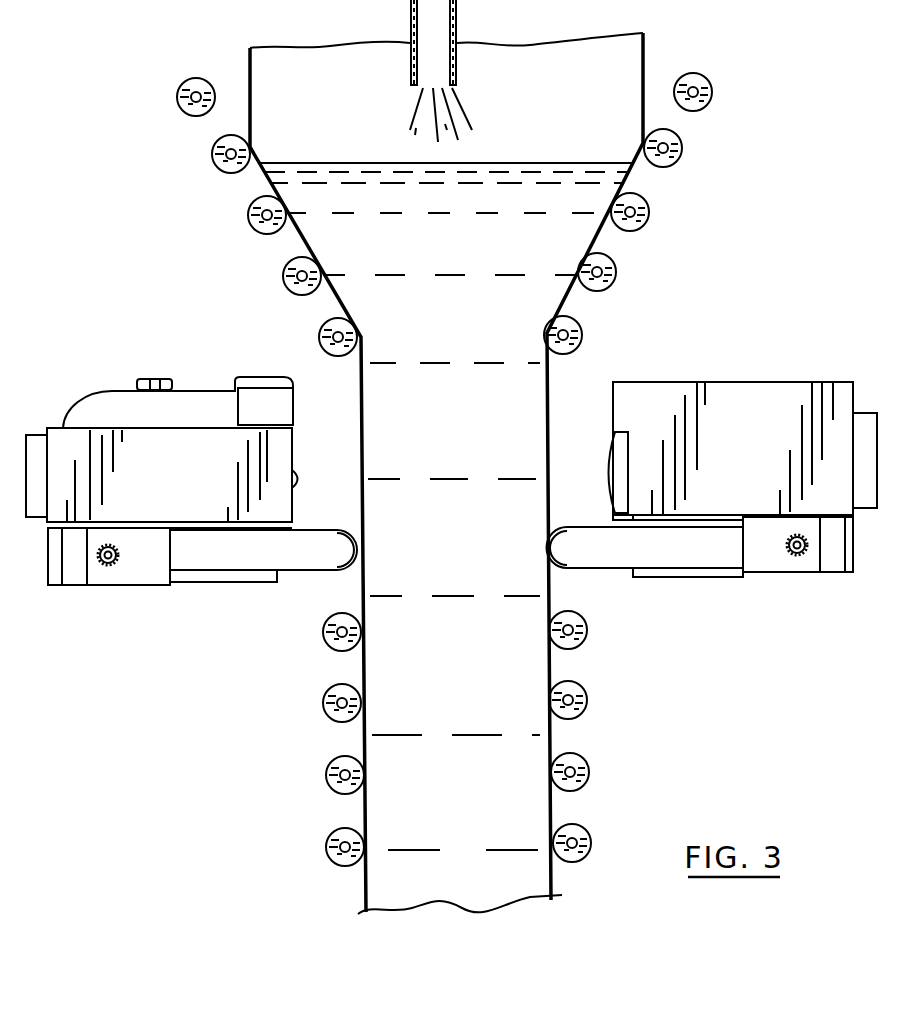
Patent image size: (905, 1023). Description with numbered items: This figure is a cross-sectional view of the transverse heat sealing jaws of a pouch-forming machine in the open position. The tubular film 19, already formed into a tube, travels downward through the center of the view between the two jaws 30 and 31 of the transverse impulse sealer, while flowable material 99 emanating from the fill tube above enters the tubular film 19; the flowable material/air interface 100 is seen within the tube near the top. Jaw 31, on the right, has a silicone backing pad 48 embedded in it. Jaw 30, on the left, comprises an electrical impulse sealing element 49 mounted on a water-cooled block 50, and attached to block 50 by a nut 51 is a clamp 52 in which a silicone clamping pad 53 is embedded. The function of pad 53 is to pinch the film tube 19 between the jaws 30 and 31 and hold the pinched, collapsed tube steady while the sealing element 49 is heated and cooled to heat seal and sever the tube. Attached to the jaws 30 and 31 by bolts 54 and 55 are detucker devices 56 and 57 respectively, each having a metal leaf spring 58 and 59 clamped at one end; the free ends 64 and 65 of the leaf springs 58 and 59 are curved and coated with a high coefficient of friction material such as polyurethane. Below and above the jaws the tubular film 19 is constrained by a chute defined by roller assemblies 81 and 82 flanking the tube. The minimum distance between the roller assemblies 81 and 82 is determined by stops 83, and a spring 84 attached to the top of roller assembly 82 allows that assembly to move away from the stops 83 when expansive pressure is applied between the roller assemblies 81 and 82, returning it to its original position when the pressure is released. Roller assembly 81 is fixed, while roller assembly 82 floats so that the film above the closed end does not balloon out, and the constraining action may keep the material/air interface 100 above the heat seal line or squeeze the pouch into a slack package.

The tubular film 19 is at (547, 408).
The flowable material 99 is at (446, 34).
The flowable material/air interface 100 is at (508, 168).
The roller assembly 81 is at (588, 700).
The roller assembly 82 is at (323, 703).
The stops 83 is at (650, 212).
The spring 84 is at (248, 222).
The jaw 30 is at (152, 477).
The jaw 31 is at (727, 466).
The silicone backing pad 48 is at (608, 477).
The electrical impulse sealing element 49 is at (300, 480).
The water-cooled block 50 is at (285, 440).
The nut 51 is at (147, 378).
The clamp 52 is at (212, 391).
The silicone clamping pad 53 is at (285, 405).
The bolt 54 is at (103, 568).
The bolt 55 is at (795, 563).
The detucker device 56 is at (153, 585).
The detucker device 57 is at (675, 578).
The metal leaf spring 58 is at (287, 560).
The metal leaf spring 59 is at (603, 562).
The free end 64 is at (347, 556).
The free end 65 is at (556, 548).